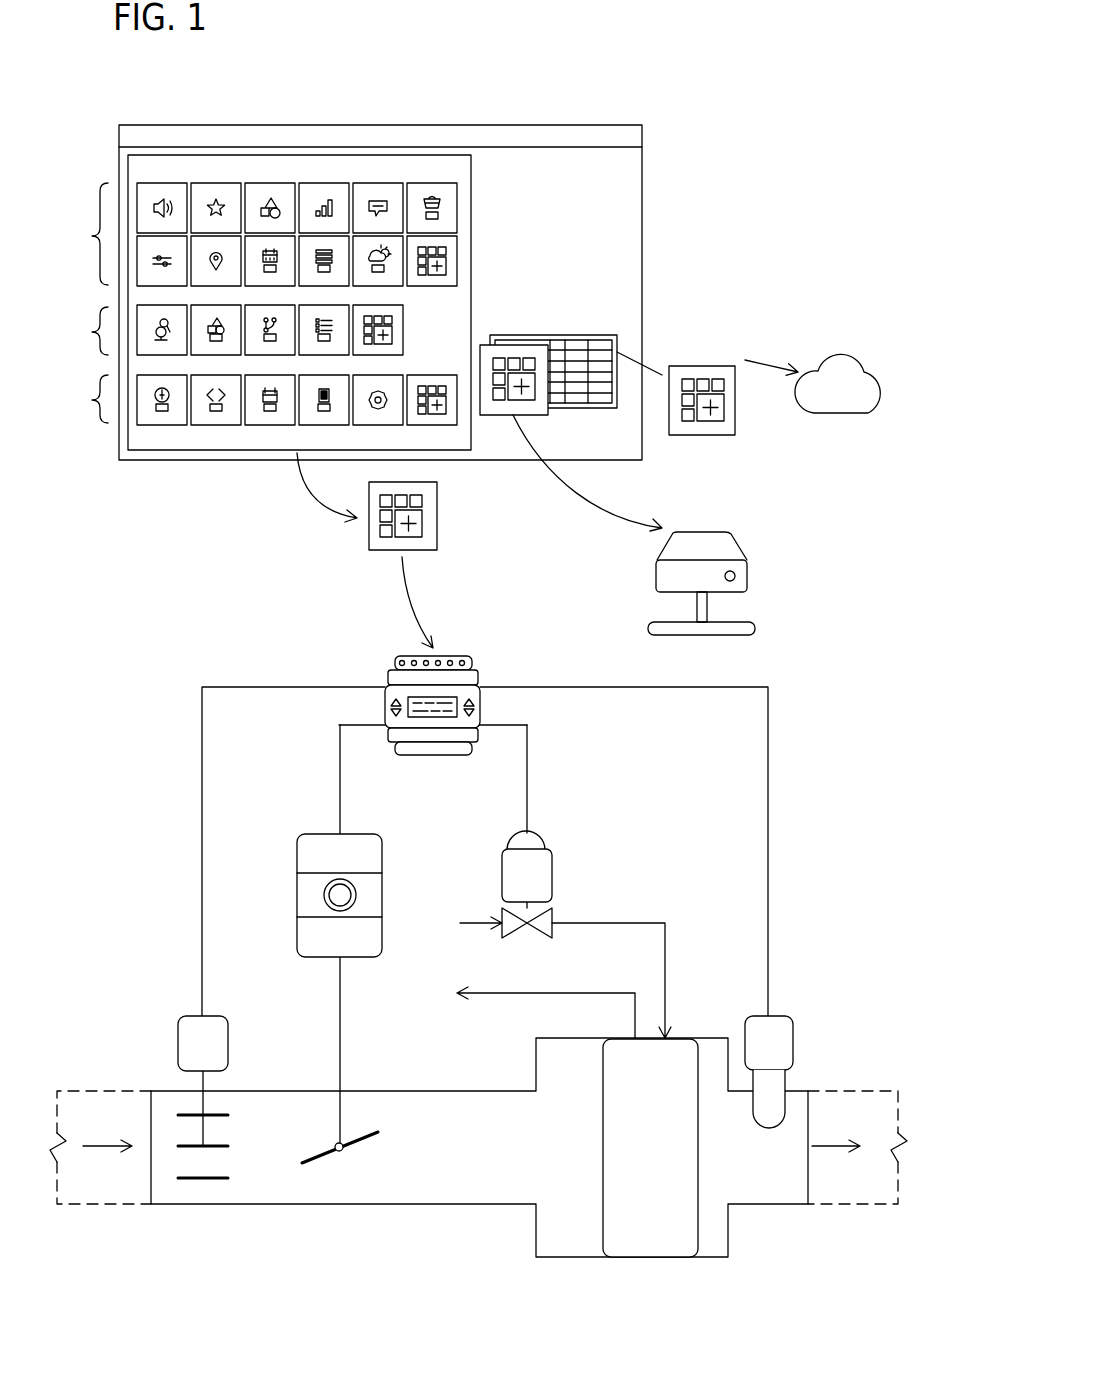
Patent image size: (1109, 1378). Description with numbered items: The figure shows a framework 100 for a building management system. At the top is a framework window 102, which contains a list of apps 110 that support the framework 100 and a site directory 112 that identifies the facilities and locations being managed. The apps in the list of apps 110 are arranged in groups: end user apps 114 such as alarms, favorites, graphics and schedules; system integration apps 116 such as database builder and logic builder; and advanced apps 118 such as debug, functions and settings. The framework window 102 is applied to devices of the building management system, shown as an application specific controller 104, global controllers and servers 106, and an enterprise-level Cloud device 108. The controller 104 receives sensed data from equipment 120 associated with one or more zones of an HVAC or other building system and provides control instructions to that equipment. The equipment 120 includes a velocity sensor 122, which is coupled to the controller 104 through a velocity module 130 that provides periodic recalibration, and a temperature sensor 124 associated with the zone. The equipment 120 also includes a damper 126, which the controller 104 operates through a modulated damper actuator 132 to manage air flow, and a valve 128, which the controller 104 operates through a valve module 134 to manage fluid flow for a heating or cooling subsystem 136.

The framework 100 is at (756, 88).
The framework window 102 is at (538, 138).
The application specific controller 104 is at (392, 670).
The global controllers and servers 106 is at (657, 575).
The Cloud device 108 is at (848, 348).
The list of apps 110 is at (287, 165).
The site directory 112 is at (581, 357).
The end user apps 114 is at (92, 236).
The system integration apps 116 is at (92, 332).
The advanced apps 118 is at (92, 400).
The equipment 120 is at (184, 878).
The velocity sensor 122 is at (218, 1143).
The temperature sensor 124 is at (793, 1043).
The damper 126 is at (327, 1155).
The valve 128 is at (512, 932).
The velocity module 130 is at (178, 1043).
The modulated damper actuator 132 is at (298, 860).
The valve module 134 is at (552, 875).
The heating or cooling subsystem 136 is at (668, 1154).